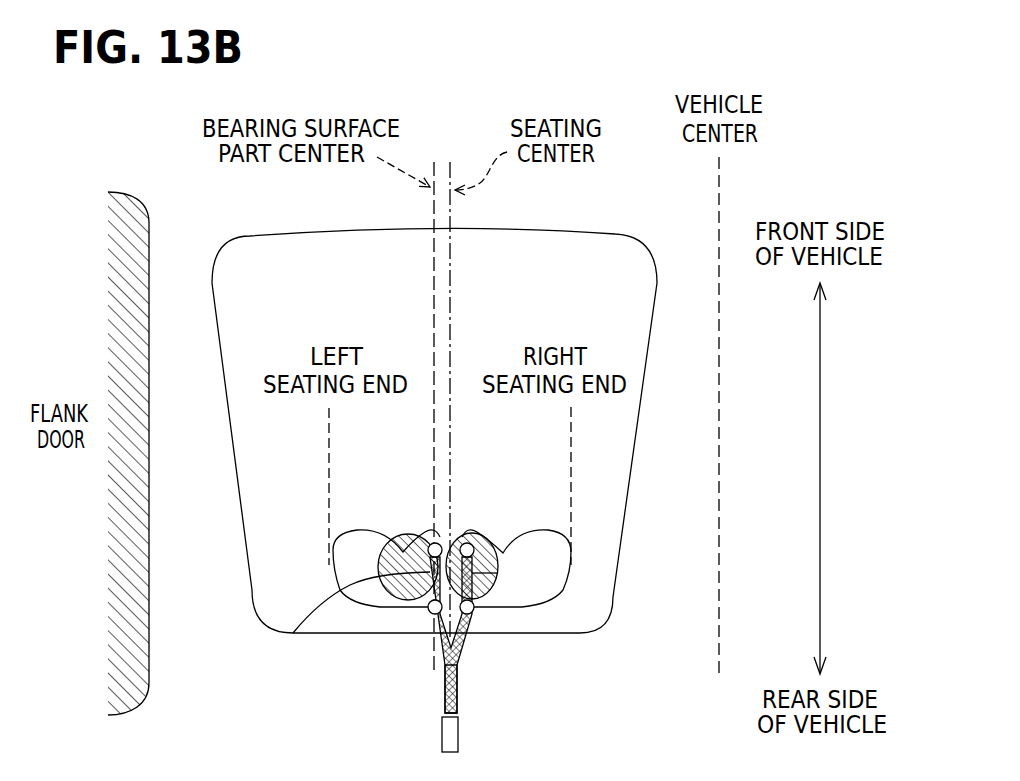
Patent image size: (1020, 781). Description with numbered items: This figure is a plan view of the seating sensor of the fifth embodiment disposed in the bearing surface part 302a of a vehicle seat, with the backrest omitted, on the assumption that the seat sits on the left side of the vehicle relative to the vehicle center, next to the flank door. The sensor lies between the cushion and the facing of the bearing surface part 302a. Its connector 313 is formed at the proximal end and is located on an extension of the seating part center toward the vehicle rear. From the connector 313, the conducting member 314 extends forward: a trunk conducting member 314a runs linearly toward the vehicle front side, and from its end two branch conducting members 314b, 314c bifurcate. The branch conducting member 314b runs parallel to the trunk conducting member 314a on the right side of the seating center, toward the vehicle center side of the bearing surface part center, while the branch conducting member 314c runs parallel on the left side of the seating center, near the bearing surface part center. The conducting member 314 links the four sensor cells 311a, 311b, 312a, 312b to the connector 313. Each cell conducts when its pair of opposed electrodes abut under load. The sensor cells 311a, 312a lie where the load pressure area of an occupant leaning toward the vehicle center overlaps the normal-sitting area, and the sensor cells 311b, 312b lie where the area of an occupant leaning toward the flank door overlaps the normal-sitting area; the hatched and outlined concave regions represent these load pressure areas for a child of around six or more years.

The bearing surface part 302a is at (320, 296).
The sensor cell 311a is at (469, 542).
The sensor cell 311b is at (430, 541).
The sensor cell 312a is at (473, 612).
The sensor cell 312b is at (428, 610).
The connector 313 is at (458, 730).
The conducting member 314 is at (457, 700).
The trunk conducting member 314a is at (445, 690).
The branch conducting member 314b is at (497, 573).
The branch conducting member 314c is at (293, 633).